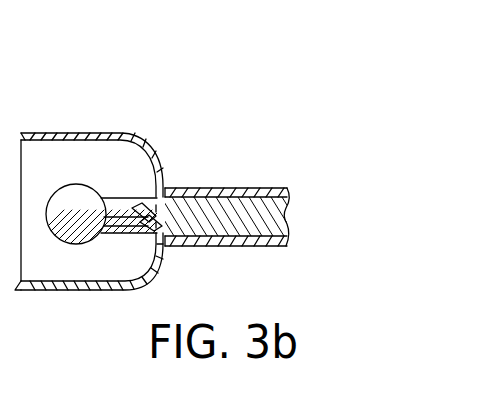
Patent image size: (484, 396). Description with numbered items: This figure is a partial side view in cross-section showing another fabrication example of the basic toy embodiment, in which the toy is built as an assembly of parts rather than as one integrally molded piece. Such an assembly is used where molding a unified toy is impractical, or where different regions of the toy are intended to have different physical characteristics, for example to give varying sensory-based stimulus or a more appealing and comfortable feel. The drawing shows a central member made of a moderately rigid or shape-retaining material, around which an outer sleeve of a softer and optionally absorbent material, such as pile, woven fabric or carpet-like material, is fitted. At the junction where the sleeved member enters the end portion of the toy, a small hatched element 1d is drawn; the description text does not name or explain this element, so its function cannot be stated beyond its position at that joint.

The latch 1d is at (143, 225).